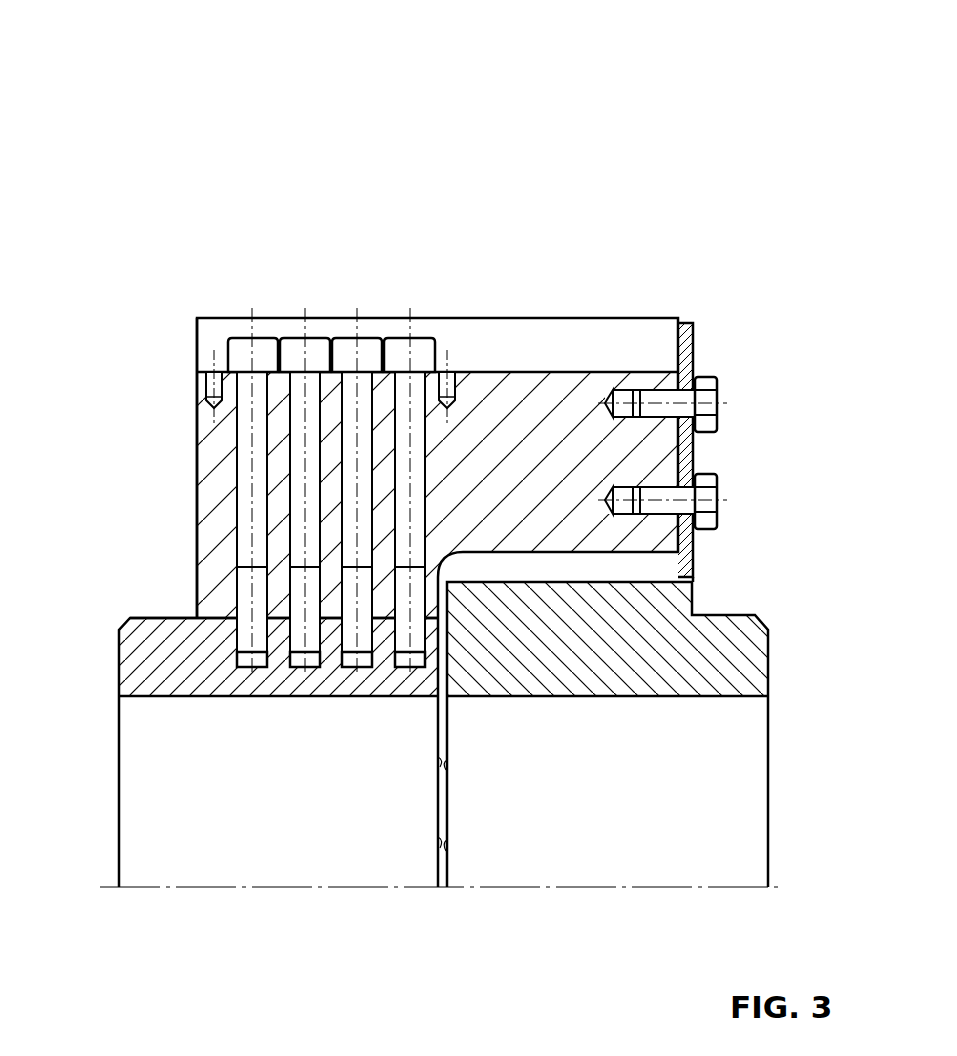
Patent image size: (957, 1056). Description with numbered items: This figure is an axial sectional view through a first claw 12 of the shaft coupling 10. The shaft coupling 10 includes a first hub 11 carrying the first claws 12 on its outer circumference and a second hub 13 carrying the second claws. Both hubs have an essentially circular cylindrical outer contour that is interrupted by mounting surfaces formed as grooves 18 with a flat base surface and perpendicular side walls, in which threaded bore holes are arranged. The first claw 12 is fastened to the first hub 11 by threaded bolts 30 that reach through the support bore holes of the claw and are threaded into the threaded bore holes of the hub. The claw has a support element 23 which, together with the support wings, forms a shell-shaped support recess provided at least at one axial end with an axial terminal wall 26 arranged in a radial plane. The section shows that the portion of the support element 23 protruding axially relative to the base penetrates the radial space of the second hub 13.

The shaft coupling 10 is at (778, 153).
The first hub 11 is at (137, 657).
The first claw 12 is at (570, 298).
The second hub 13 is at (727, 657).
The groove 18 is at (162, 603).
The support element 23 is at (215, 446).
The axial terminal wall 26 is at (716, 457).
The threaded bolt 30 is at (258, 350).